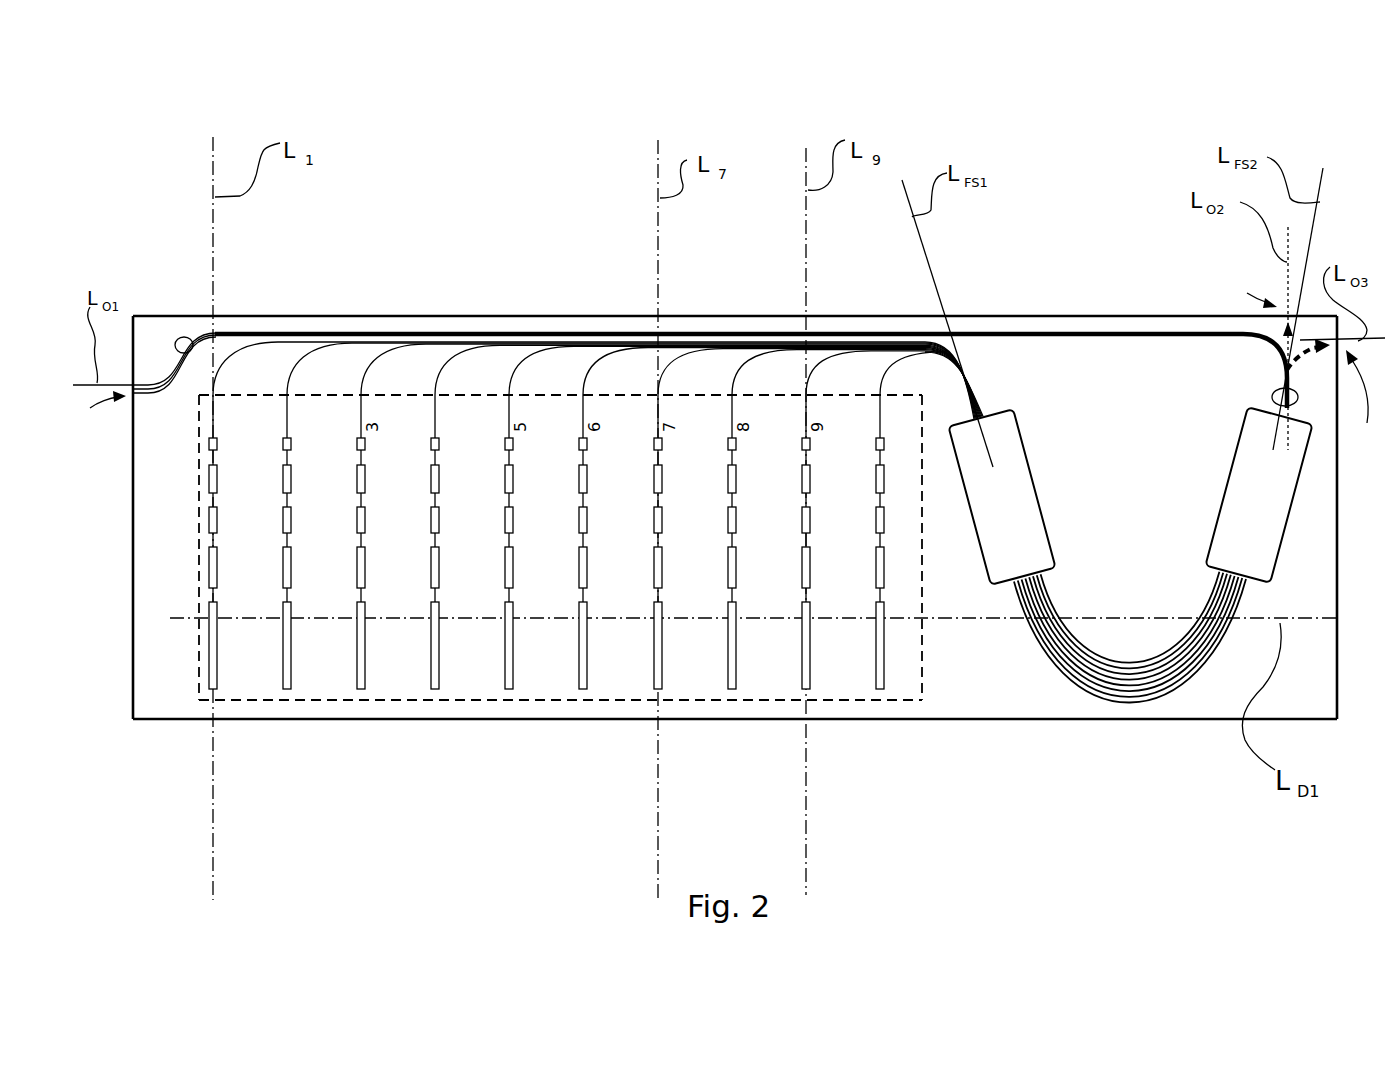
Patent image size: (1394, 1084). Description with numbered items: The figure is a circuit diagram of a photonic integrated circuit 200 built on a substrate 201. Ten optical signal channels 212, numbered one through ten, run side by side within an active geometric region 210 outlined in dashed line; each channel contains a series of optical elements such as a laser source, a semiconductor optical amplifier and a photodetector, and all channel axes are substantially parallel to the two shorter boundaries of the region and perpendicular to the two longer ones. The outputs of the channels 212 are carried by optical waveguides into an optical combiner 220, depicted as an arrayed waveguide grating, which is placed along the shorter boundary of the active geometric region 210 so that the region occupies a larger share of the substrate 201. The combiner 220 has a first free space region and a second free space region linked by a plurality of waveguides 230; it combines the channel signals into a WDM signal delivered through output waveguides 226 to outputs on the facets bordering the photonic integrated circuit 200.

The photonic integrated circuit 200 is at (462, 176).
The substrate 201 is at (1320, 706).
The active geometric region 210 is at (406, 703).
The optical signal channel 212 is at (172, 435).
The optical combiner 220 is at (1118, 370).
The output waveguide 226 is at (1272, 396).
The waveguides 230 is at (1103, 643).